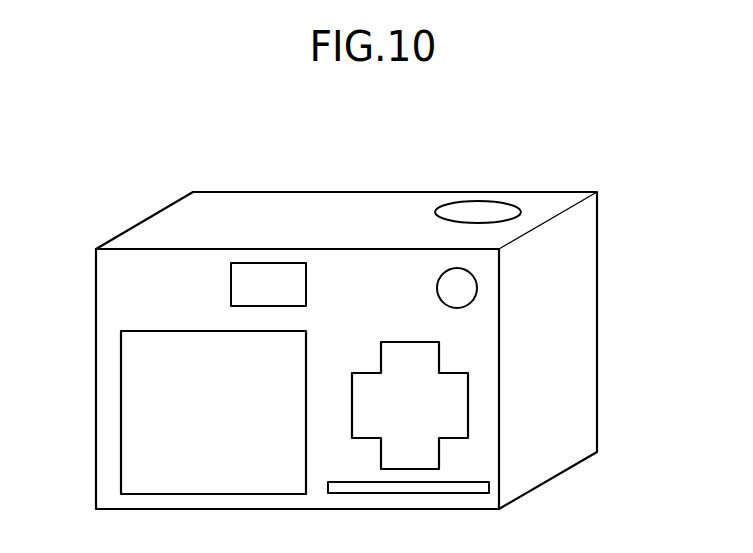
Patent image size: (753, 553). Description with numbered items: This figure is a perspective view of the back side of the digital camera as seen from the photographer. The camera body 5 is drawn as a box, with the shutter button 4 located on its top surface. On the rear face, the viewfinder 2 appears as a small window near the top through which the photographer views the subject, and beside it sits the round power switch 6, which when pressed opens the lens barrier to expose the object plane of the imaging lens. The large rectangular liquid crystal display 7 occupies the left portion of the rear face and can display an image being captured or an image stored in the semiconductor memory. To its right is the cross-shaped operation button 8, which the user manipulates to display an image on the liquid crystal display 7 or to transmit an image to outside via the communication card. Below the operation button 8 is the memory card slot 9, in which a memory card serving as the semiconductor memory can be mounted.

The viewfinder 2 is at (270, 285).
The shutter button 4 is at (477, 212).
The camera body 5 is at (597, 312).
The power switch 6 is at (457, 287).
The liquid crystal display 7 is at (162, 403).
The operation button 8 is at (450, 402).
The memory card slot 9 is at (477, 482).